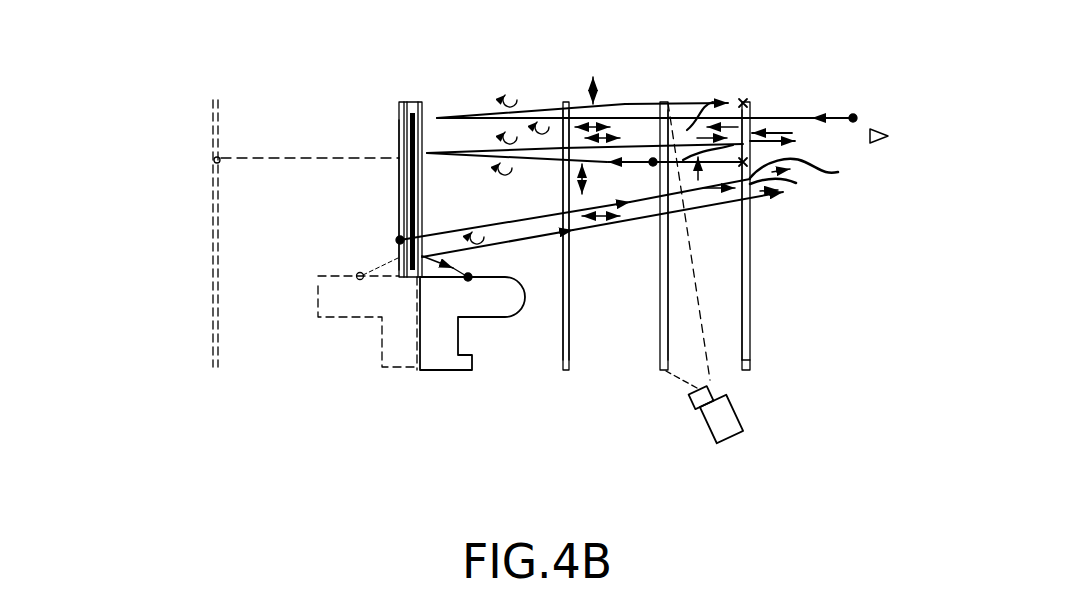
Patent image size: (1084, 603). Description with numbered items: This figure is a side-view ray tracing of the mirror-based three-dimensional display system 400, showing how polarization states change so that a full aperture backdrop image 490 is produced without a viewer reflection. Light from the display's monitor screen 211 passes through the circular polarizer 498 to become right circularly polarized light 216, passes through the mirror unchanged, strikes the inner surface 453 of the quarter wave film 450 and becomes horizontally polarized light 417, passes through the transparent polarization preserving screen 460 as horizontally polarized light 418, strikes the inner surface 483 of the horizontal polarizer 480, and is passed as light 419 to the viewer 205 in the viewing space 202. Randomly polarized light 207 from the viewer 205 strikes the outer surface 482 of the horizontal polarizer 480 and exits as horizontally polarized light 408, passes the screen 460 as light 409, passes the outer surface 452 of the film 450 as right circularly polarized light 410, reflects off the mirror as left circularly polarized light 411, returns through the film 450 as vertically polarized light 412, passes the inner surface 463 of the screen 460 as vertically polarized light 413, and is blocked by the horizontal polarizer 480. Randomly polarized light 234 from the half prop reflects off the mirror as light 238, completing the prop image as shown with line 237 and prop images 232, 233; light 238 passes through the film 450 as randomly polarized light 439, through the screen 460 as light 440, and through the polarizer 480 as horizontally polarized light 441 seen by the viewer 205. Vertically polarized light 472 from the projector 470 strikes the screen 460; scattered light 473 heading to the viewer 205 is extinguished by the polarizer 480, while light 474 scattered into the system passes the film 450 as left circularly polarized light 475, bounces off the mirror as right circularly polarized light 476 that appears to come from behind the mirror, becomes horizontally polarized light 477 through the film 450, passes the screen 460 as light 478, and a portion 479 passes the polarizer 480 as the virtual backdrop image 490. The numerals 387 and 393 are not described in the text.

The mirror-based 3D display system 400 is at (137, 101).
The image plane 387 is at (213, 99).
The image ray 393 is at (278, 160).
The monitor/display screen 211 is at (399, 141).
The circular polarizer 498 is at (412, 100).
The line 237 is at (398, 258).
The extended top surface 233 is at (325, 276).
The prop image 232 is at (314, 322).
The light from the prop 234 is at (468, 277).
The right circularly polarized light 216 is at (445, 232).
The randomly polarized light 238 is at (533, 237).
The right circularly polarized light 476 is at (491, 218).
The right circularly polarized light 410 is at (495, 118).
The left circularly polarized light 411 is at (537, 118).
The vertically polarized light 412 is at (610, 114).
The horizontally polarized light 409 is at (620, 120).
The horizontally polarized light 408 is at (683, 113).
The light 478 is at (708, 106).
The vertically polarized light 413 is at (742, 100).
The light from the viewer 207 is at (800, 117).
The scattered light 473 is at (752, 138).
The portion of light 479 is at (792, 138).
The horizontally polarized light 477 is at (620, 148).
The left circularly polarized light 475 is at (530, 152).
The horizontally polarized light 417 is at (647, 217).
The light scattering from the screen 474 is at (619, 231).
The randomly polarized light 439 is at (602, 227).
The randomly polarized light 440 is at (698, 205).
The horizontally polarized light 441 is at (762, 195).
The horizontally polarized light 418 is at (791, 187).
The passed light 419 is at (838, 172).
The viewer 205 is at (909, 120).
The viewing space 202 is at (877, 277).
The second or inner surface of the quarter wave film 453 is at (563, 338).
The first or outer surface of the quarter wave film 452 is at (570, 352).
The second or inner surface of the screen 463 is at (662, 340).
The projected light 472 is at (707, 380).
The first or outer surface of the horizontal polarizer 482 is at (751, 335).
The second or inner surface of the horizontal polarizer 483 is at (746, 370).
The quarter wave film 450 is at (546, 270).
The transparent polarization preserving screen 460 is at (665, 375).
The projector 470 is at (763, 441).
The horizontal polarizer 480 is at (818, 269).
The backdrop image 490 is at (215, 367).